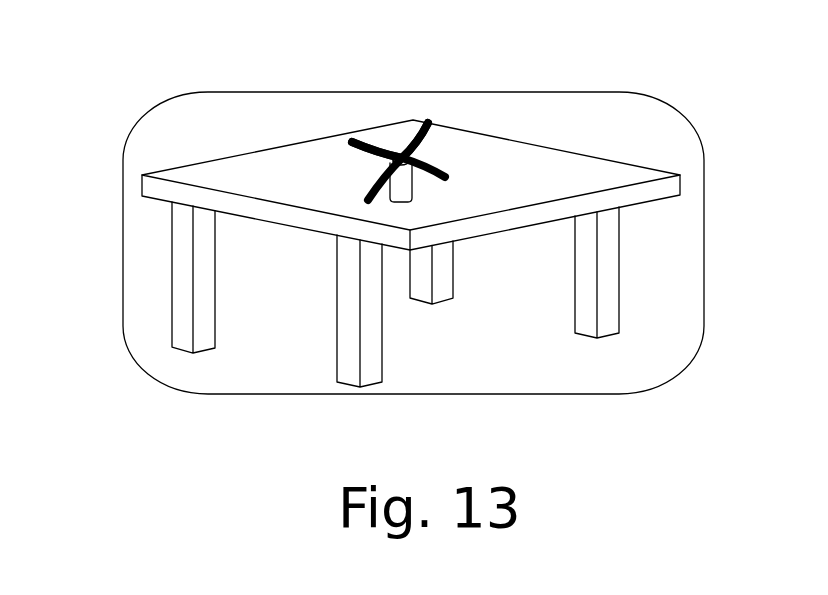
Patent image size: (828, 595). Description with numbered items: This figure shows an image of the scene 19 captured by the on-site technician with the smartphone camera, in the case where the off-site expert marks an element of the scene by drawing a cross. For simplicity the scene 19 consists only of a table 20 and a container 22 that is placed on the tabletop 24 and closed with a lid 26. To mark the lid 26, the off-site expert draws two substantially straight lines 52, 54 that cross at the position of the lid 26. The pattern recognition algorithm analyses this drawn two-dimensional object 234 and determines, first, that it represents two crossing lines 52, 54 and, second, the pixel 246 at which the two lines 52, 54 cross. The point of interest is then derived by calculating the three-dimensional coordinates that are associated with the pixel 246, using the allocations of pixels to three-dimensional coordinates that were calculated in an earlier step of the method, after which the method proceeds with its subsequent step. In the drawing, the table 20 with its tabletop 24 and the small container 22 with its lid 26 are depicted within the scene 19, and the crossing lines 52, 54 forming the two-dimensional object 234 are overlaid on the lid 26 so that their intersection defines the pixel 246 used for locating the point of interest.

The scene 19 is at (302, 320).
The table 20 is at (180, 296).
The container 22 is at (403, 185).
The tabletop 24 is at (560, 157).
The lid 26 is at (418, 157).
The straight line 52 is at (388, 150).
The straight line 54 is at (413, 122).
The 2D object 234 is at (448, 162).
The pixel 246 is at (390, 162).